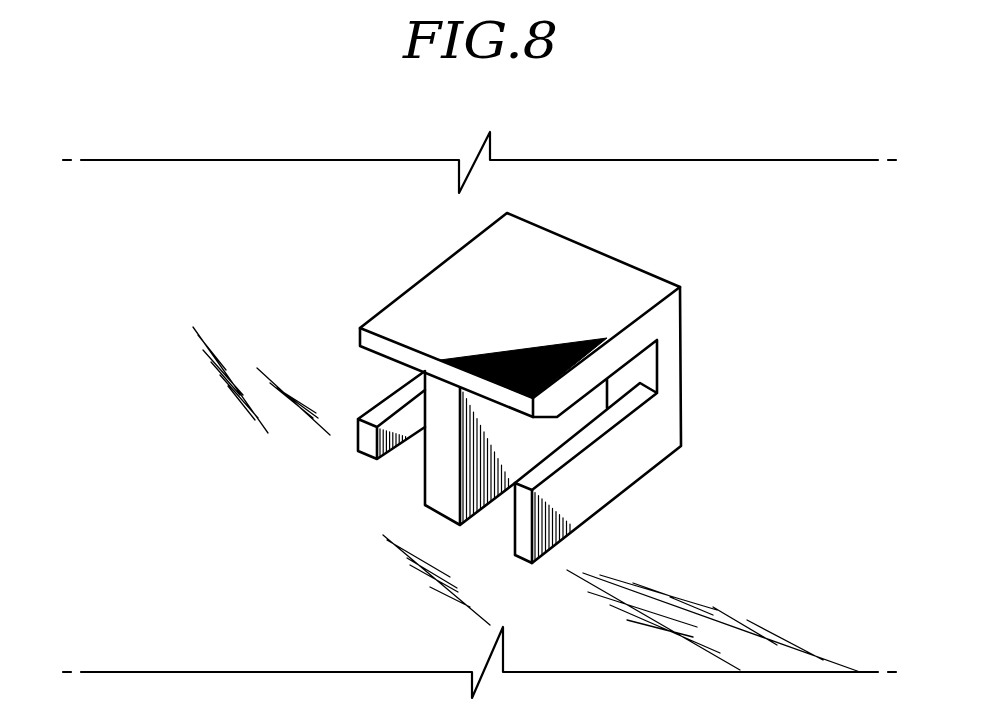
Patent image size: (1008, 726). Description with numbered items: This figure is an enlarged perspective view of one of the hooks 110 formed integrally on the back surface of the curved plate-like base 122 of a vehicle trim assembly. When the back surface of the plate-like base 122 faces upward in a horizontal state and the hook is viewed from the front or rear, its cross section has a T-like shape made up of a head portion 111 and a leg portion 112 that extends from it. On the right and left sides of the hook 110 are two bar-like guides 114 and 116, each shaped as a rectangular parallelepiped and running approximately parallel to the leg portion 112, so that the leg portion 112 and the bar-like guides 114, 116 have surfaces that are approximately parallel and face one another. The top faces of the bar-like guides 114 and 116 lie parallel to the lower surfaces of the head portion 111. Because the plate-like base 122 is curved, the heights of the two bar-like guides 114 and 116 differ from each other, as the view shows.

The hook 110 is at (635, 268).
The head portion 111 is at (361, 340).
The leg portion 112 is at (440, 500).
The bar-like guide 114 is at (583, 495).
The bar-like guide 116 is at (363, 462).
The plate-like base 122 is at (368, 273).